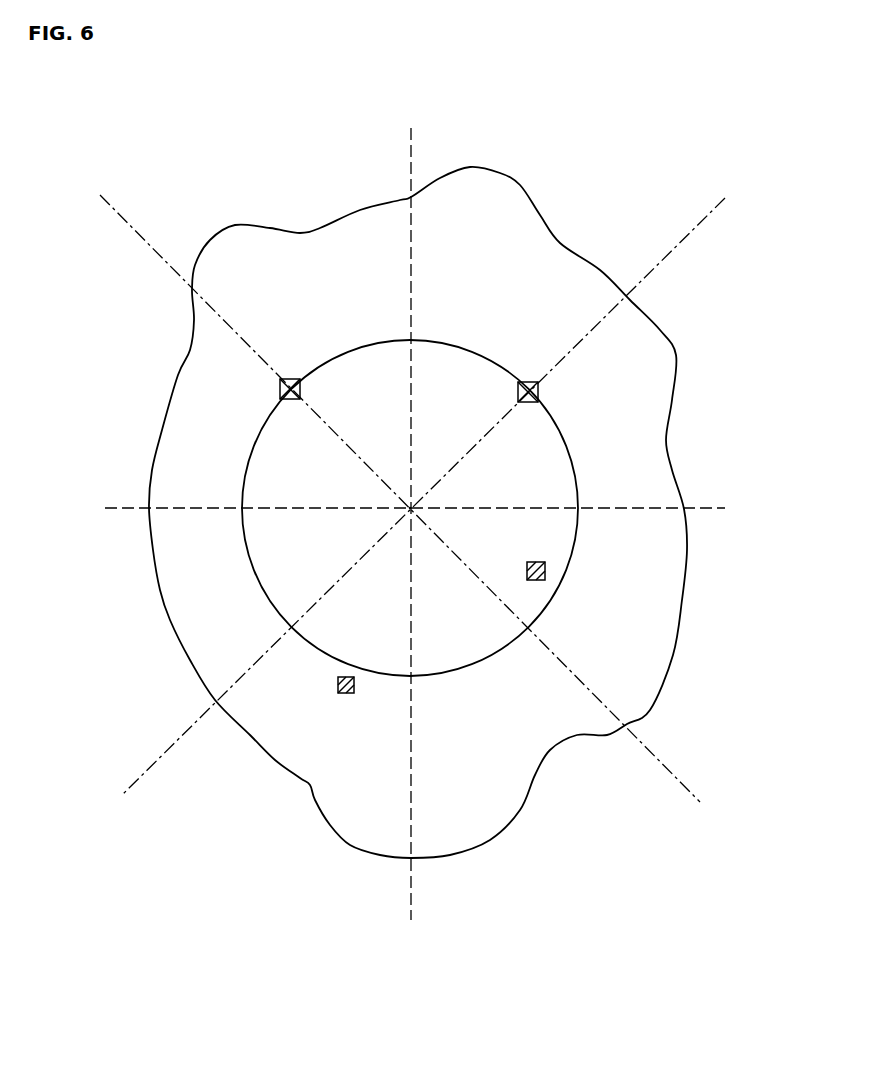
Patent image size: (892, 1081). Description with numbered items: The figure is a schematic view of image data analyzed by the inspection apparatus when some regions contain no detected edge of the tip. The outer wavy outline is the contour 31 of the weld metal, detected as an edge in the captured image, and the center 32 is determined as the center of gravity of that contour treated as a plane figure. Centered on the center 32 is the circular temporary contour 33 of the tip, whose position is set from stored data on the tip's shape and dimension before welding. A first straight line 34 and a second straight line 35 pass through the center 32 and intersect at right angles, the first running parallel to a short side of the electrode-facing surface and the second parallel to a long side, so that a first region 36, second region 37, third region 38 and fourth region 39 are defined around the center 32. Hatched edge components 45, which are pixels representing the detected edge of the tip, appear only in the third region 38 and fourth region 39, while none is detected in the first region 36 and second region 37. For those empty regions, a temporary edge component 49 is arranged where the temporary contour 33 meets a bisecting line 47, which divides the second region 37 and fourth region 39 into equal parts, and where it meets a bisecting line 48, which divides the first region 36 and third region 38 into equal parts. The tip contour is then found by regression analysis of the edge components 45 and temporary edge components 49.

The contour of the weld metal 31 is at (683, 622).
The center 32 is at (414, 506).
The temporary contour of the tip 33 is at (566, 440).
The first straight line 34 is at (707, 508).
The second straight line 35 is at (413, 146).
The first region 36 is at (592, 188).
The second region 37 is at (267, 188).
The third region 38 is at (255, 813).
The fourth region 39 is at (584, 813).
The edge component 45 is at (342, 695).
The bisecting line 47 is at (672, 768).
The bisecting line 48 is at (693, 230).
The temporary edge component 49 is at (292, 378).